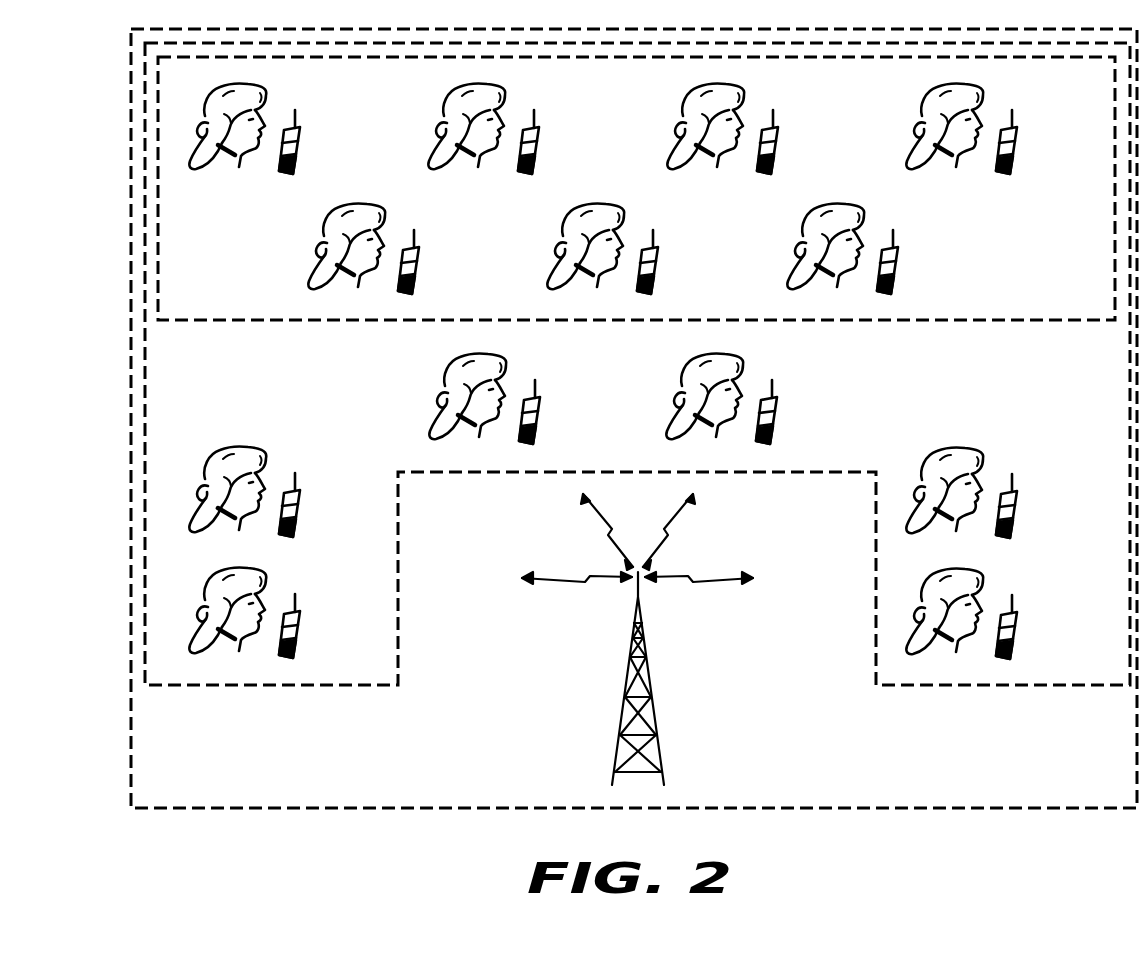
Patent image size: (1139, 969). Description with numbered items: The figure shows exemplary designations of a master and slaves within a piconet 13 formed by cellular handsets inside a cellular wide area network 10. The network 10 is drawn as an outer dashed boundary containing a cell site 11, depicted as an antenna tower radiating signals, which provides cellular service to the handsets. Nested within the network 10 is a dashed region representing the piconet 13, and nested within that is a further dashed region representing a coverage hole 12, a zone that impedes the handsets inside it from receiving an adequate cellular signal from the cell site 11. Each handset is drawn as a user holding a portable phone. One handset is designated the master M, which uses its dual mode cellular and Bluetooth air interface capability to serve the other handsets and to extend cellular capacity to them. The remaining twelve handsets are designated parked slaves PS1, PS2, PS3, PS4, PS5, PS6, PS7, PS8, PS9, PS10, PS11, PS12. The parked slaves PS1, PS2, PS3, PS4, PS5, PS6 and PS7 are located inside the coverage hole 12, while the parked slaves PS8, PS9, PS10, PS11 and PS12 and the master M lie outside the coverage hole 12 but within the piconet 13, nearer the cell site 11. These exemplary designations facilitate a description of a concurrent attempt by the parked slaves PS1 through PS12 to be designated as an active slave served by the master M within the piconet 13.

The cellular wide area network 10 is at (477, 752).
The cell site 11 is at (649, 673).
The coverage hole 12 is at (230, 294).
The piconet 13 is at (343, 403).
The master M is at (542, 408).
The parked slave PS1 is at (302, 138).
The parked slave PS2 is at (541, 138).
The parked slave PS3 is at (780, 138).
The parked slave PS4 is at (1019, 138).
The parked slave PS5 is at (421, 258).
The parked slave PS6 is at (660, 258).
The parked slave PS7 is at (900, 258).
The parked slave PS8 is at (302, 622).
The parked slave PS9 is at (302, 501).
The parked slave PS10 is at (779, 408).
The parked slave PS11 is at (1019, 502).
The parked slave PS12 is at (1019, 623).